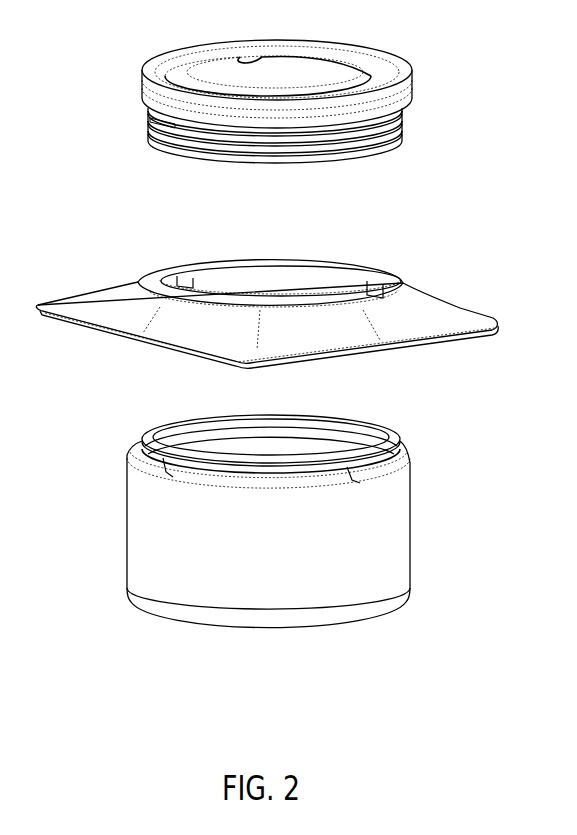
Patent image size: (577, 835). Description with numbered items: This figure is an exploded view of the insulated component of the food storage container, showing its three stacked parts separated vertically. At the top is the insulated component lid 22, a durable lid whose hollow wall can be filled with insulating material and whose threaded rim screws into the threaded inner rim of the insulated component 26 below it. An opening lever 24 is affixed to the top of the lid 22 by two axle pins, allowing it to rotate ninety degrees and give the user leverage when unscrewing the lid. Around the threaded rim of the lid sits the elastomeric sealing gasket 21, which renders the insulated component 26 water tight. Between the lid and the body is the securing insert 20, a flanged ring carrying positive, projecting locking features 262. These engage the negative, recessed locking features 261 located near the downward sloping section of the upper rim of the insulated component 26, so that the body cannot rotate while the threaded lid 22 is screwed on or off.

The securing insert 20 is at (418, 312).
The elastomeric sealing gasket 21 is at (411, 143).
The insulated component lid 22 is at (355, 66).
The opening lever 24 is at (186, 64).
The insulated component 26 is at (421, 565).
The negative locking feature 261 is at (357, 488).
The positive locking feature 262 is at (378, 277).